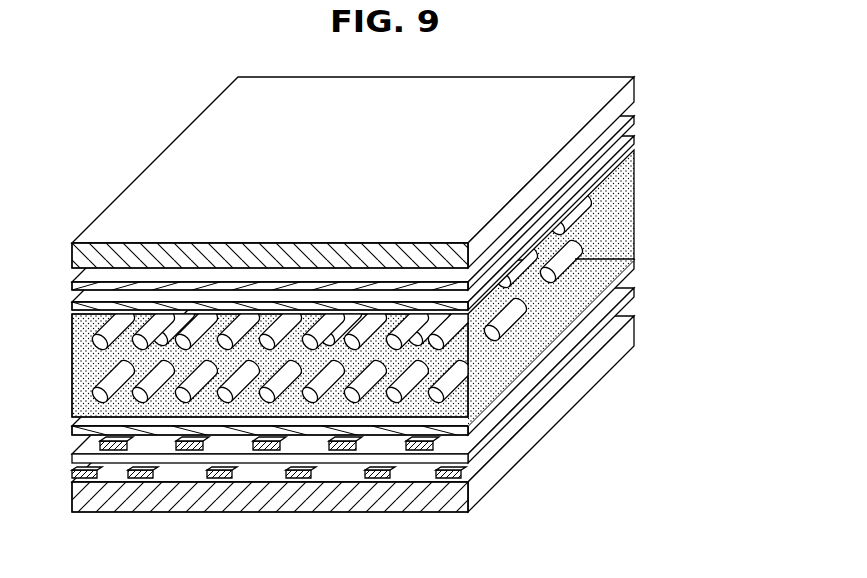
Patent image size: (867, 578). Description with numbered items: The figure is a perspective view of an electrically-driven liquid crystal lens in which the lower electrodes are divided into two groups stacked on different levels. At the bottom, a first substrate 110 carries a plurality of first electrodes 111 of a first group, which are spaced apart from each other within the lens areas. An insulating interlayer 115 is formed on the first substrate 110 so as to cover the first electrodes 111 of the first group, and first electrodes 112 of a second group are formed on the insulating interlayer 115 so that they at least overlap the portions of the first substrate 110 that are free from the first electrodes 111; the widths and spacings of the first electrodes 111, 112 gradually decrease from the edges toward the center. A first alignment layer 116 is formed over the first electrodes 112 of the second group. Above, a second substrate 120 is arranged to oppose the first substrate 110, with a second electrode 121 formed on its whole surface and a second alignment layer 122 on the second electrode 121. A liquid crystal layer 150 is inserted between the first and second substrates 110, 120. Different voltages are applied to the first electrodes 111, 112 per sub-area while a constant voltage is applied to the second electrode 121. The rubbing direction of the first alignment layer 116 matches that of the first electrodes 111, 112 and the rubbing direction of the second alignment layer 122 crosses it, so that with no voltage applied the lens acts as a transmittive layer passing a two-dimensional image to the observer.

The first substrate 110 is at (634, 335).
The first electrodes of a first group 111 is at (442, 480).
The first electrodes of a second group 112 is at (184, 450).
The insulating interlayer 115 is at (634, 293).
The first alignment layer 116 is at (634, 265).
The liquid crystal layer 150 is at (634, 202).
The second substrate 120 is at (634, 87).
The second electrode 121 is at (634, 120).
The second alignment layer 122 is at (634, 141).